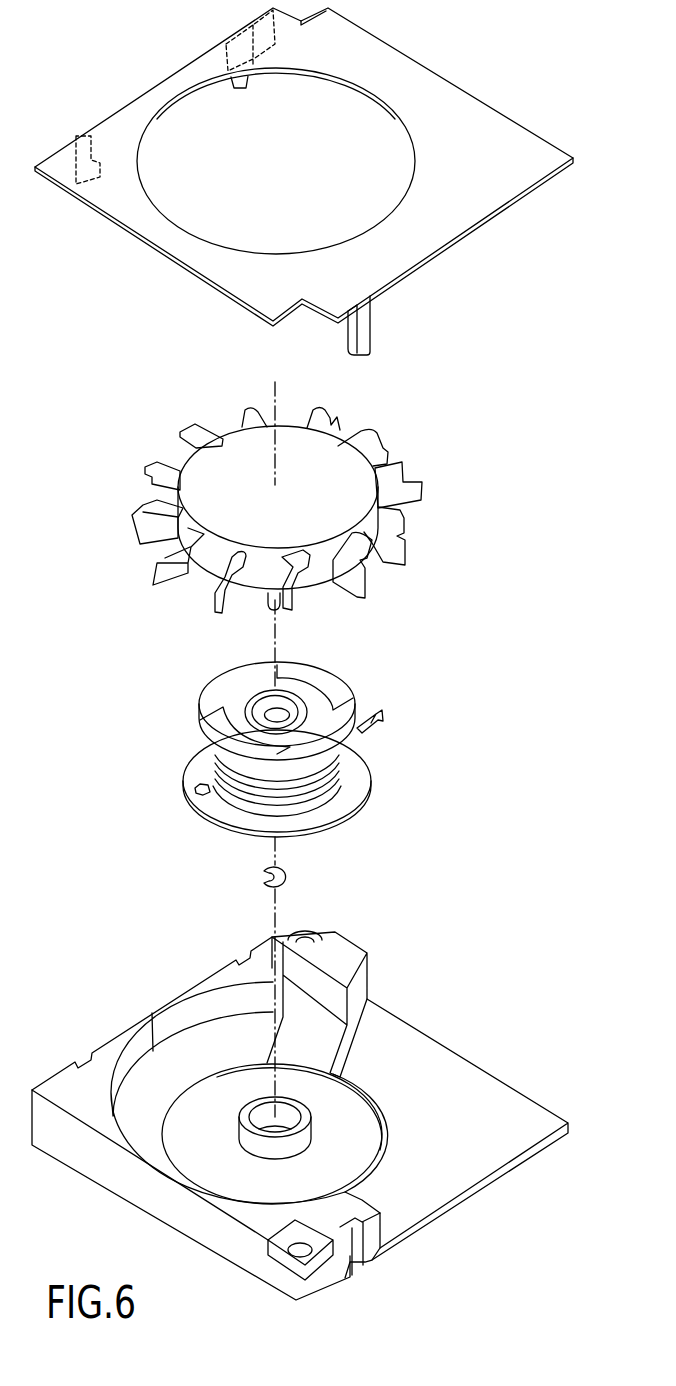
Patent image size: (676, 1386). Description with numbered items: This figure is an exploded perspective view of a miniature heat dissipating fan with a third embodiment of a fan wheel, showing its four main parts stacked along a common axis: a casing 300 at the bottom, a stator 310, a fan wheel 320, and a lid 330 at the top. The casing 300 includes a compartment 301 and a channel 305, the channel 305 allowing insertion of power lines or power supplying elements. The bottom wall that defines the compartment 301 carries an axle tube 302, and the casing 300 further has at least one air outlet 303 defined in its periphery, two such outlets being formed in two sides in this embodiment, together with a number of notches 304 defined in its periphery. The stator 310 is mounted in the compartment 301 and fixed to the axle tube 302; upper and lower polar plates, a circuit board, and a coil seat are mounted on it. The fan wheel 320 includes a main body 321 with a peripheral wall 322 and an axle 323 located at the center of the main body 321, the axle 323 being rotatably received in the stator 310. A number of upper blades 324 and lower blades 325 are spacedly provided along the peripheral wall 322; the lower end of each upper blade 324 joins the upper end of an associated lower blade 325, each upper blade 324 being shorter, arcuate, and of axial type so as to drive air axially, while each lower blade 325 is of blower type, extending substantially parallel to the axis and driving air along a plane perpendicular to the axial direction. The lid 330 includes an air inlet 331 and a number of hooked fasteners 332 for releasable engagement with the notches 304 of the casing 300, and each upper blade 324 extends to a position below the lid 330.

The casing 300 is at (171, 1213).
The compartment 301 is at (171, 1056).
The axle tube 302 is at (308, 1133).
The air outlet 303 is at (477, 1075).
The notch 304 is at (366, 1258).
The channel 305 is at (256, 950).
The stator 310 is at (370, 751).
The fan wheel 320 is at (428, 412).
The main body 321 is at (340, 447).
The peripheral wall 322 is at (322, 580).
The axle 323 is at (268, 602).
The upper blade 324 is at (390, 519).
The lower blade 325 is at (393, 560).
The lid 330 is at (304, 181).
The air inlet 331 is at (404, 167).
The hooked fastener 332 is at (370, 323).